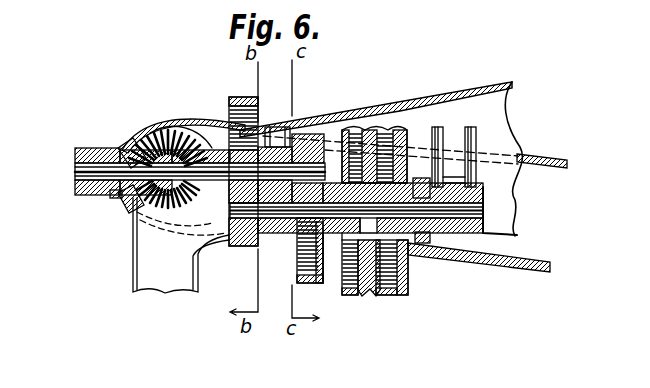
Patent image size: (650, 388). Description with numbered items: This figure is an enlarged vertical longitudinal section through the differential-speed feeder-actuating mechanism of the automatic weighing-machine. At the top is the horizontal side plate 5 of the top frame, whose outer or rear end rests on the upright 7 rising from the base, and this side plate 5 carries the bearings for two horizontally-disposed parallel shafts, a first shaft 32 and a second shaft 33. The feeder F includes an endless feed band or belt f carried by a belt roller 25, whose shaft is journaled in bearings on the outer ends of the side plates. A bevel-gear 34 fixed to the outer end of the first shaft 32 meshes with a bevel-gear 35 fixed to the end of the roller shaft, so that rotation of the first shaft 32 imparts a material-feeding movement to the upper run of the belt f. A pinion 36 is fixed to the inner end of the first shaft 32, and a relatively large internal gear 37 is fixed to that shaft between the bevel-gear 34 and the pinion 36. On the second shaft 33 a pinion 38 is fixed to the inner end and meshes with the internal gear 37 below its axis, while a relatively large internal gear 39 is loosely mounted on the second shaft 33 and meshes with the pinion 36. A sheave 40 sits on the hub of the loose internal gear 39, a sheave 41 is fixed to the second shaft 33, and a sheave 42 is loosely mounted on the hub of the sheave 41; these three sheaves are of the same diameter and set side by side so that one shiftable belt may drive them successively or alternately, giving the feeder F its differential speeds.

The side plate 5 is at (381, 159).
The upright 7 is at (143, 257).
The belt roller 25 is at (160, 128).
The first shaft 32 is at (75, 174).
The second shaft 33 is at (456, 252).
The bevel-gear 34 is at (120, 198).
The bevel-gear 35 is at (175, 150).
The pinion 36 is at (305, 148).
The internal gear 37 is at (243, 97).
The pinion 38 is at (238, 248).
The internal gear 39 is at (320, 284).
The sheave 40 is at (350, 297).
The sheave 41 is at (371, 297).
The sheave 42 is at (400, 297).
The endless feed belt f is at (549, 162).
The feeder F is at (494, 285).